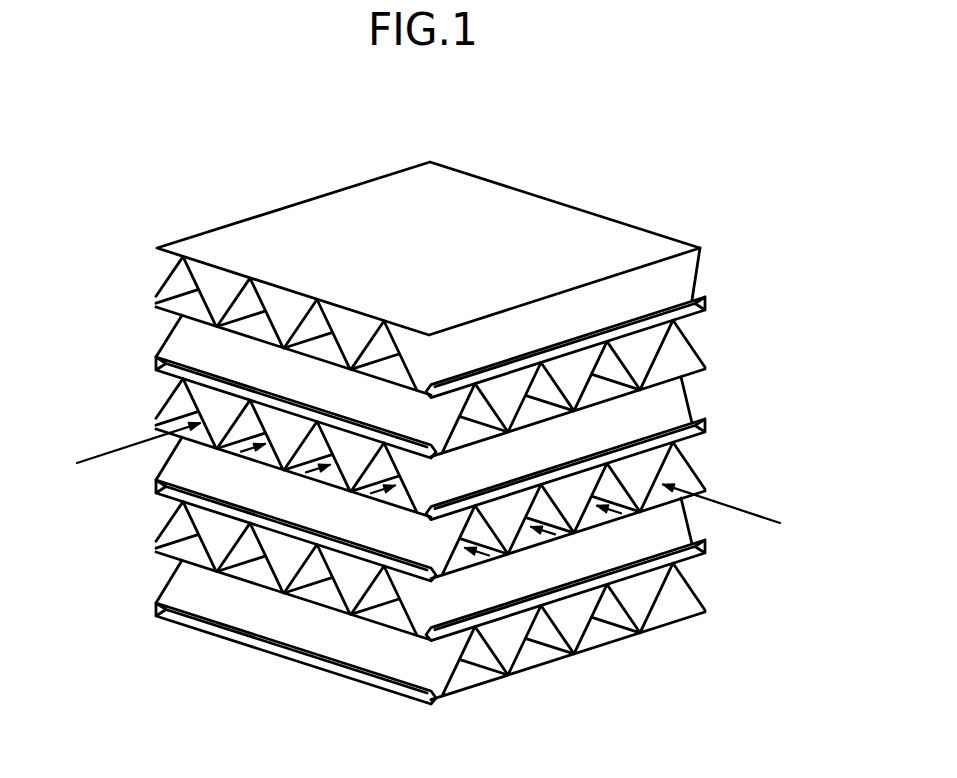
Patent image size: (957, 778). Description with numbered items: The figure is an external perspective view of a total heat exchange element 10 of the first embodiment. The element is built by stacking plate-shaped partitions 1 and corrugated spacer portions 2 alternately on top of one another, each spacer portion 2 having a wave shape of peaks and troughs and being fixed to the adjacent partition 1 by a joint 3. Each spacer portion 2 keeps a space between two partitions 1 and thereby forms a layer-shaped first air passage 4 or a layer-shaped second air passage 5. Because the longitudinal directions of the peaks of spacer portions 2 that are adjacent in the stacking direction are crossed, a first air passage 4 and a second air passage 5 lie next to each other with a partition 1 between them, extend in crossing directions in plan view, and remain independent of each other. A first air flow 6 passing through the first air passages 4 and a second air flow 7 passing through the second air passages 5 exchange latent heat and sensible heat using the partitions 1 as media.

The total heat exchange element 10 is at (548, 153).
The partition 1 is at (610, 234).
The spacer portion 2 is at (690, 343).
The joint 3 is at (181, 258).
The first air passage 4 is at (180, 286).
The second air passage 5 is at (678, 461).
The first air flow 6 is at (96, 458).
The second air flow 7 is at (760, 515).